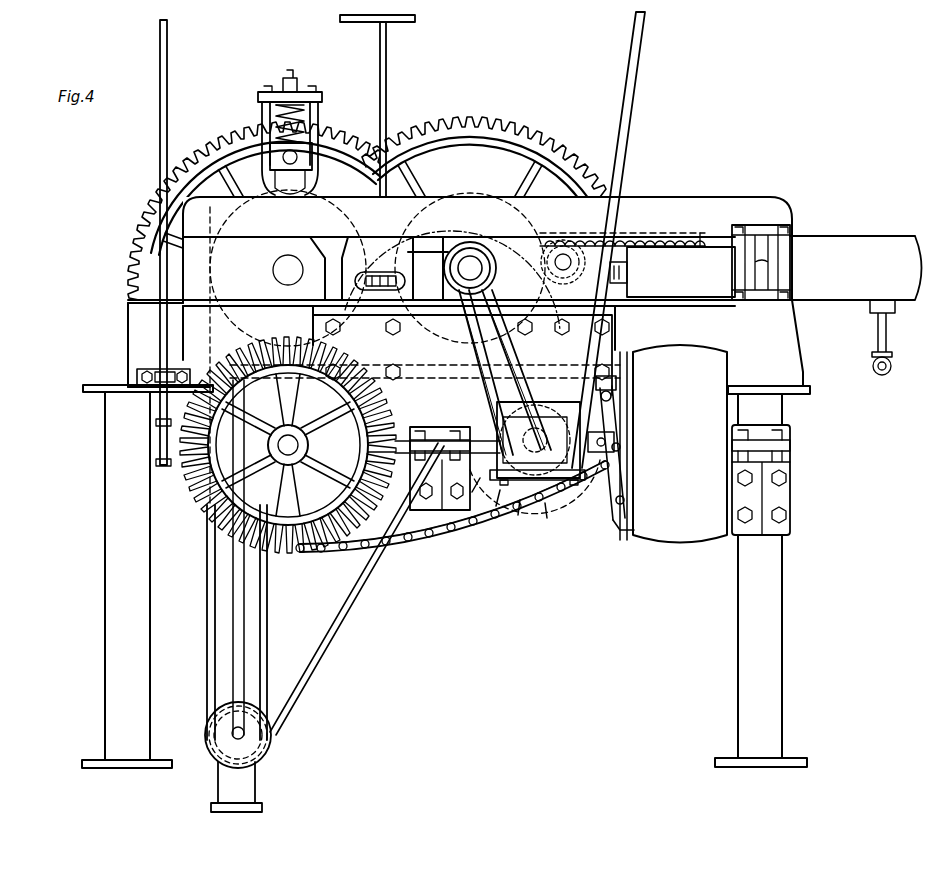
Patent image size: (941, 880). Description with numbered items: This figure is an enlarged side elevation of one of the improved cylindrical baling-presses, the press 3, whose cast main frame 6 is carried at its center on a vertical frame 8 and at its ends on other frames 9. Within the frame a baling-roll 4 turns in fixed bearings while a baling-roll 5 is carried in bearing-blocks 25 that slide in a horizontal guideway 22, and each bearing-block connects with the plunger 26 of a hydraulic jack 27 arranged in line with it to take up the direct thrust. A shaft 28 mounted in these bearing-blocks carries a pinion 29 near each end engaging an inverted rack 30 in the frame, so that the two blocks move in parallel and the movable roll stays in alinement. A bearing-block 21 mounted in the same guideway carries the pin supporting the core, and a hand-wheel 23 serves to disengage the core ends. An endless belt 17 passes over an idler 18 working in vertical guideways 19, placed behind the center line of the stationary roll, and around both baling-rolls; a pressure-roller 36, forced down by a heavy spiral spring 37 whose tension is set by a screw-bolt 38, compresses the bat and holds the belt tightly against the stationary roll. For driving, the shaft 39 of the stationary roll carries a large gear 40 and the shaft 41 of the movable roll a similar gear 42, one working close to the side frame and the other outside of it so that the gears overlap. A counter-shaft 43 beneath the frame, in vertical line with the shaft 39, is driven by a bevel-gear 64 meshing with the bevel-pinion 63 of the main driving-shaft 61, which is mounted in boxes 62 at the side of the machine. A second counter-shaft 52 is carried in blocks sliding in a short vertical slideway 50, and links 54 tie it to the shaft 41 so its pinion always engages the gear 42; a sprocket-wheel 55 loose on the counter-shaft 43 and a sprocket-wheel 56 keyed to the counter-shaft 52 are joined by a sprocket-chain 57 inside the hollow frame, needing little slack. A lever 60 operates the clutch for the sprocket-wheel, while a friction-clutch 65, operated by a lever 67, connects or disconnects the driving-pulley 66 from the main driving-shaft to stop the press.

The press 3 is at (144, 300).
The baling-roll 4 is at (293, 192).
The baling-roll 5 is at (478, 192).
The main frame 6 is at (446, 482).
The vertical frame 8 is at (148, 377).
The frame 9 is at (761, 580).
The endless belt 17 is at (372, 570).
The idler 18 is at (268, 748).
The vertical guideways 19 is at (256, 677).
The bearing-block 21 is at (398, 270).
The horizontal guideway 22 is at (425, 240).
The hand-wheel 23 is at (382, 106).
The bearing-block 25 is at (488, 246).
The plunger 26 is at (672, 272).
The hydraulic jack 27 is at (827, 300).
The shaft 28 is at (552, 270).
The pinion 29 is at (554, 260).
The rack 30 is at (645, 230).
The pressure-roller 36 is at (320, 160).
The spiral spring 37 is at (306, 120).
The screw-bolt 38 is at (290, 81).
The shaft 39 is at (283, 277).
The gear 40 is at (240, 145).
The shaft 41 is at (470, 268).
The gear 42 is at (545, 147).
The counter-shaft 43 is at (288, 445).
The vertical slideway 50 is at (566, 470).
The counter-shaft 52 is at (537, 443).
The link 54 is at (508, 340).
The sprocket-wheel 55 is at (288, 445).
The sprocket-wheel 56 is at (528, 525).
The sprocket-chain 57 is at (455, 538).
The lever 60 is at (168, 90).
The main driving-shaft 61 is at (636, 447).
The box 62 is at (440, 428).
The bevel-pinion 63 is at (414, 426).
The bevel-gear 64 is at (300, 547).
The friction-clutch 65 is at (628, 400).
The driving-pulley 66 is at (673, 444).
The lever 67 is at (617, 240).